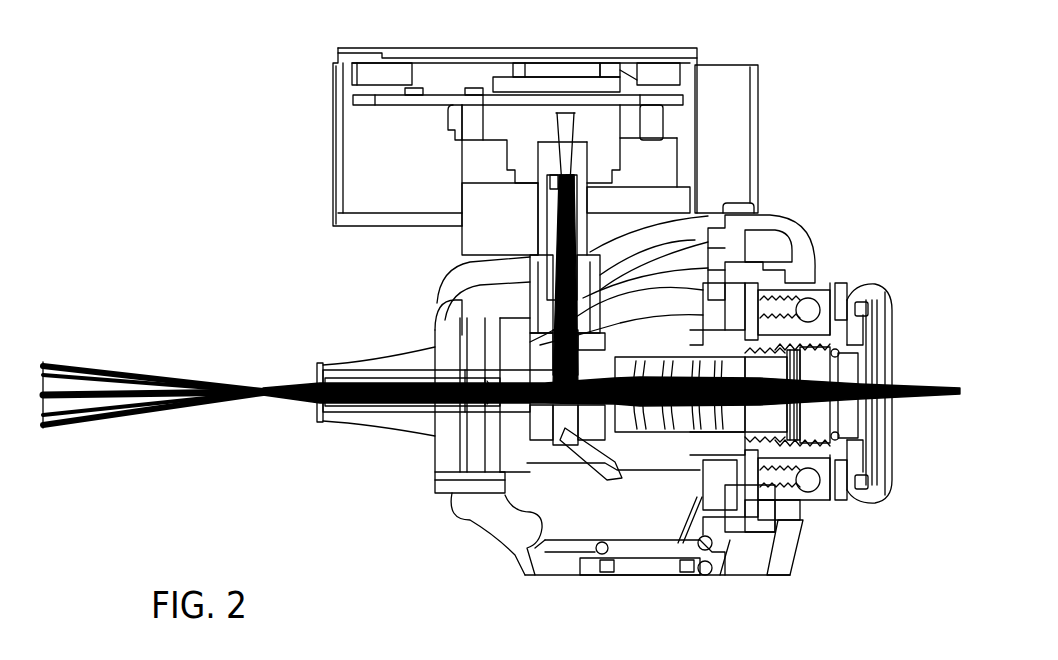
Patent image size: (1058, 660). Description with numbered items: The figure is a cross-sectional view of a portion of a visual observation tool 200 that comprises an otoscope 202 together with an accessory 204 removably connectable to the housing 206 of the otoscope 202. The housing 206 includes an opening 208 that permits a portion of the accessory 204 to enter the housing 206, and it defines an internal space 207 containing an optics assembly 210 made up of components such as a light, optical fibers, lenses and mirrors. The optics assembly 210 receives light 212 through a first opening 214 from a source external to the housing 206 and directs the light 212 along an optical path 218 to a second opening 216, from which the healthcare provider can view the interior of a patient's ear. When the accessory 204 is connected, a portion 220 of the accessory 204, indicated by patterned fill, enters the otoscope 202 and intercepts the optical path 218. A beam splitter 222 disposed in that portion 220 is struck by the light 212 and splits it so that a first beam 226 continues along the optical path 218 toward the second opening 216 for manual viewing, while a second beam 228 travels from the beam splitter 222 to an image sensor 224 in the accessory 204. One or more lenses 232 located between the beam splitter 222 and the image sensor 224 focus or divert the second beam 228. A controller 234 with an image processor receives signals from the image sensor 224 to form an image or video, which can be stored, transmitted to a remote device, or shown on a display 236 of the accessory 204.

The visual observation tool 200 is at (203, 57).
The otoscope 202 is at (417, 500).
The accessory 204 is at (731, 47).
The housing 206 is at (782, 228).
The internal space 207 is at (668, 527).
The opening 208 is at (598, 248).
The optics assembly 210 is at (672, 462).
The light 212 is at (262, 386).
The first opening 214 is at (312, 409).
The second opening 216 is at (893, 417).
The optical path 218 is at (415, 381).
The portion of the accessory 220 is at (570, 437).
The beam splitter 222 is at (594, 357).
The image sensor 224 is at (563, 110).
The first beam 226 is at (868, 377).
The second beam 228 is at (583, 300).
The lenses 232 is at (555, 297).
The controller 234 is at (548, 80).
The display 236 is at (758, 97).